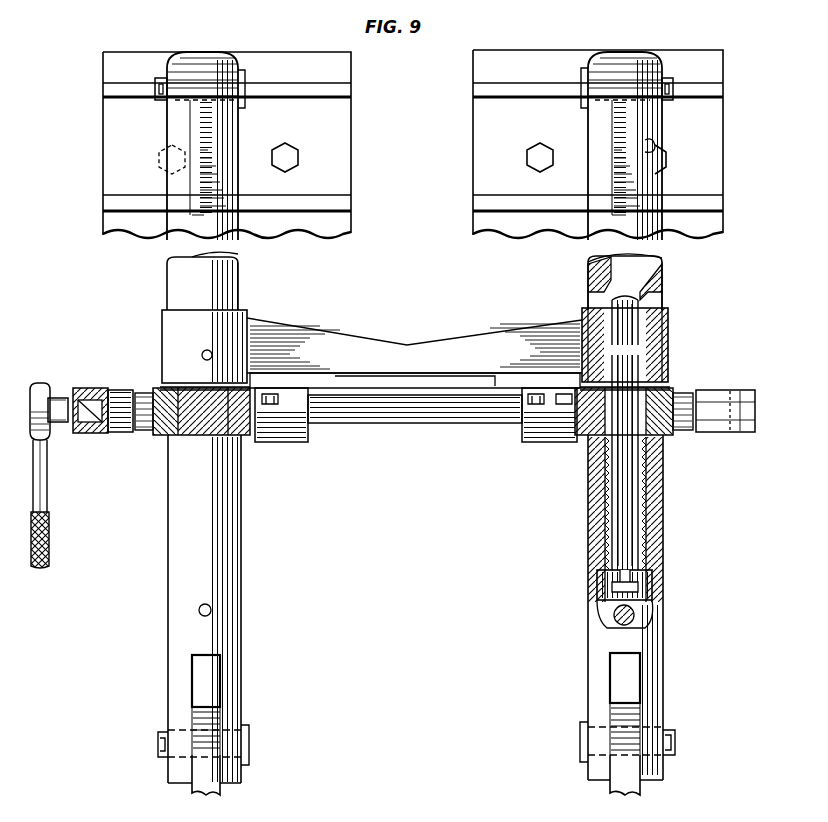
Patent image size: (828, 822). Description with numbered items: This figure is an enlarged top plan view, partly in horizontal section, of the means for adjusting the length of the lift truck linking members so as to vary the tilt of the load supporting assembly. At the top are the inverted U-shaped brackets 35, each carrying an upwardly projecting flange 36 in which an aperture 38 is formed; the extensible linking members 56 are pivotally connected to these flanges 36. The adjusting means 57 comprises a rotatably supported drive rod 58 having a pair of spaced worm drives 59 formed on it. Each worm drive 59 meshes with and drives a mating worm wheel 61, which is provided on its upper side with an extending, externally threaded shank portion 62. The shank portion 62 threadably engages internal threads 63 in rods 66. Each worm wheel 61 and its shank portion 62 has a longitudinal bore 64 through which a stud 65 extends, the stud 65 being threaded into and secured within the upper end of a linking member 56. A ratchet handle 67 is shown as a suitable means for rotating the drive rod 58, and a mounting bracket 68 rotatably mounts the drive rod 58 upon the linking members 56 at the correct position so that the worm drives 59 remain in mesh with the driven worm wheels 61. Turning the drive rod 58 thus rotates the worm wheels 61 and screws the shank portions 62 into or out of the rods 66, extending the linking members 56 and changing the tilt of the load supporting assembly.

The inverted U-shaped bracket 35 is at (473, 140).
The flange 36 is at (200, 60).
The aperture 38 is at (160, 78).
The extensible linking member 56 is at (178, 276).
The adjusting means 57 is at (572, 451).
The drive rod 58 is at (415, 423).
The worm drive 59 is at (168, 430).
The worm wheel 61 is at (168, 388).
The externally threaded shank portion 62 is at (606, 498).
The internal threads 63 is at (650, 498).
The longitudinal bore 64 is at (614, 530).
The stud 65 is at (632, 530).
The rod 66 is at (178, 668).
The ratchet handle 67 is at (57, 480).
The mounting bracket 68 is at (409, 345).